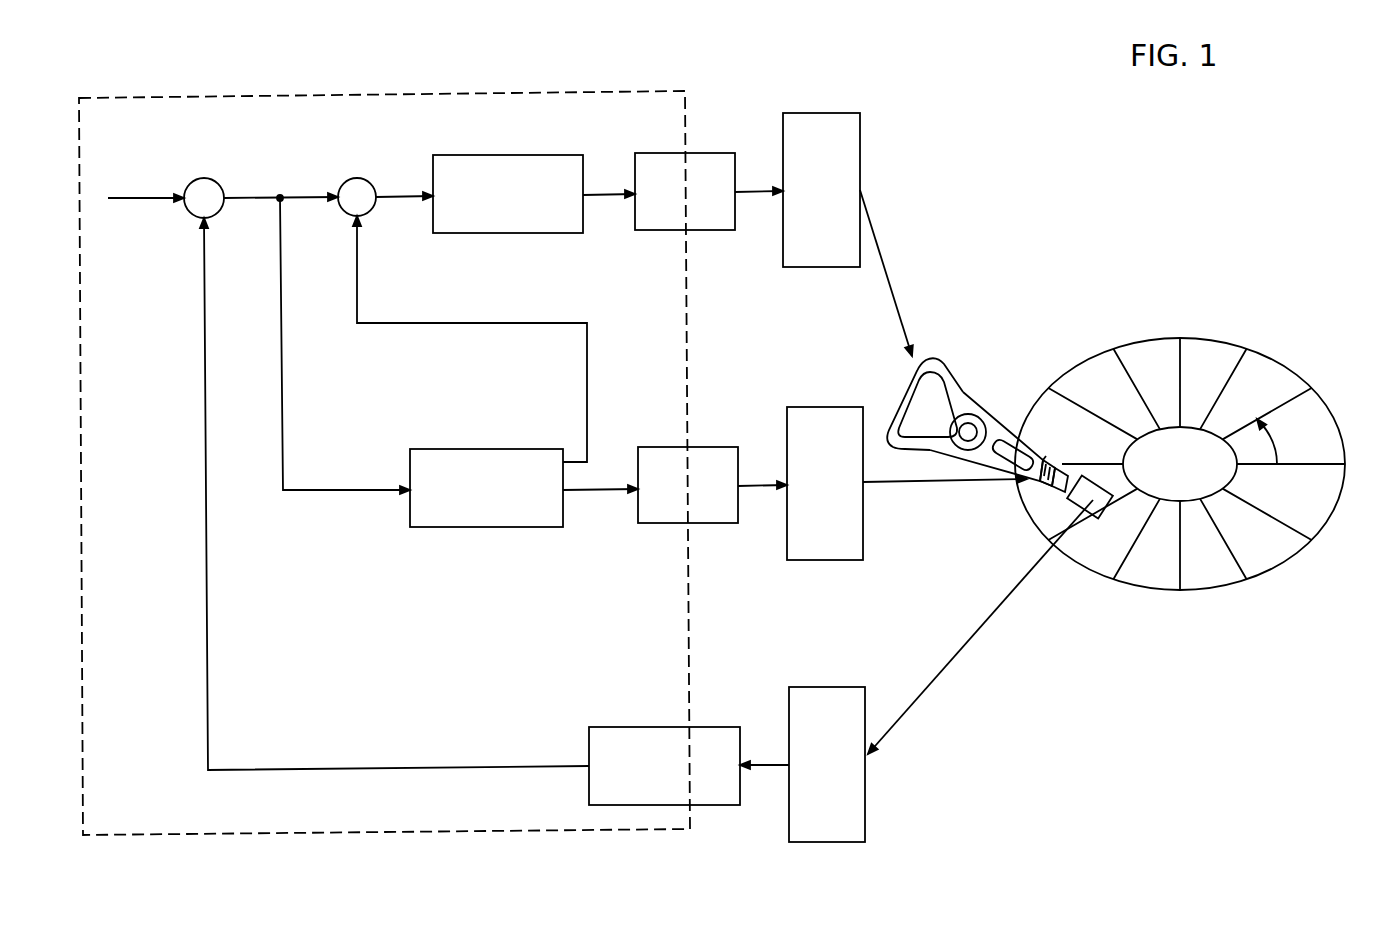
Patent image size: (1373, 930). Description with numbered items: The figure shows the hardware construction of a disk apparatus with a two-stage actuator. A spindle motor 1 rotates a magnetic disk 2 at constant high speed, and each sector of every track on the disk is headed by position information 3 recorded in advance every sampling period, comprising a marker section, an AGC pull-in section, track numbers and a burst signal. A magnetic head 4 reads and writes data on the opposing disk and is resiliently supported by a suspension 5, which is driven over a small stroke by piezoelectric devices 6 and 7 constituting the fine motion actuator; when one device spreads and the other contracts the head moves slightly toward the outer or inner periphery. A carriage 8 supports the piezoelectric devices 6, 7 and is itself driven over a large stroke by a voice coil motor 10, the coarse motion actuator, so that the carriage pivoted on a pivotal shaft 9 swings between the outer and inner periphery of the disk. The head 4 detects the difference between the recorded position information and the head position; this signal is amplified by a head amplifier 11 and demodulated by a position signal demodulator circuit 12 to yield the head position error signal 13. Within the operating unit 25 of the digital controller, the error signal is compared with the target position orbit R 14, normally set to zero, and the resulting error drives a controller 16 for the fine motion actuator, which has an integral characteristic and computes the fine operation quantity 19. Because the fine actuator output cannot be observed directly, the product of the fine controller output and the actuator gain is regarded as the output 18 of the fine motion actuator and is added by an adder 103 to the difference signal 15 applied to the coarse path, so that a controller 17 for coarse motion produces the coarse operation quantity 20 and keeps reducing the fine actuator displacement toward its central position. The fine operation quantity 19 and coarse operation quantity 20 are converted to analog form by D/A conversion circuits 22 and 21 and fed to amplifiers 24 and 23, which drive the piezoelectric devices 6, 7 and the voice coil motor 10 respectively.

The spindle motor 1 is at (1210, 442).
The magnetic disk 2 is at (1323, 400).
The position information 3 is at (1180, 357).
The magnetic head 4 is at (1093, 512).
The suspension 5 is at (1060, 492).
The piezoelectric device 6 is at (1040, 492).
The piezoelectric device 7 is at (1050, 466).
The carriage 8 is at (993, 428).
The pivotal shaft 9 is at (970, 425).
The voice coil motor 10 is at (940, 362).
The head amplifier 11 is at (833, 687).
The position signal demodulator circuit 12 is at (713, 727).
The head position error signal YPES 13 is at (433, 768).
The target position orbit R 14 is at (143, 206).
The difference signal 15 is at (298, 199).
The controller for fine motion actuator 16 is at (488, 450).
The controller for coarse motion 17 is at (517, 154).
The output of the fine motion actuator 18 is at (503, 322).
The operation quantity UP 19 is at (590, 489).
The operation quantity UV 20 is at (607, 198).
The D/A conversion circuit 21 is at (703, 153).
The D/A conversion circuit 22 is at (707, 447).
The amplifier for coarse motion 23 is at (823, 113).
The amplifier for fine motion 24 is at (835, 407).
The operating unit 25 is at (578, 90).
The adder 103 is at (365, 178).